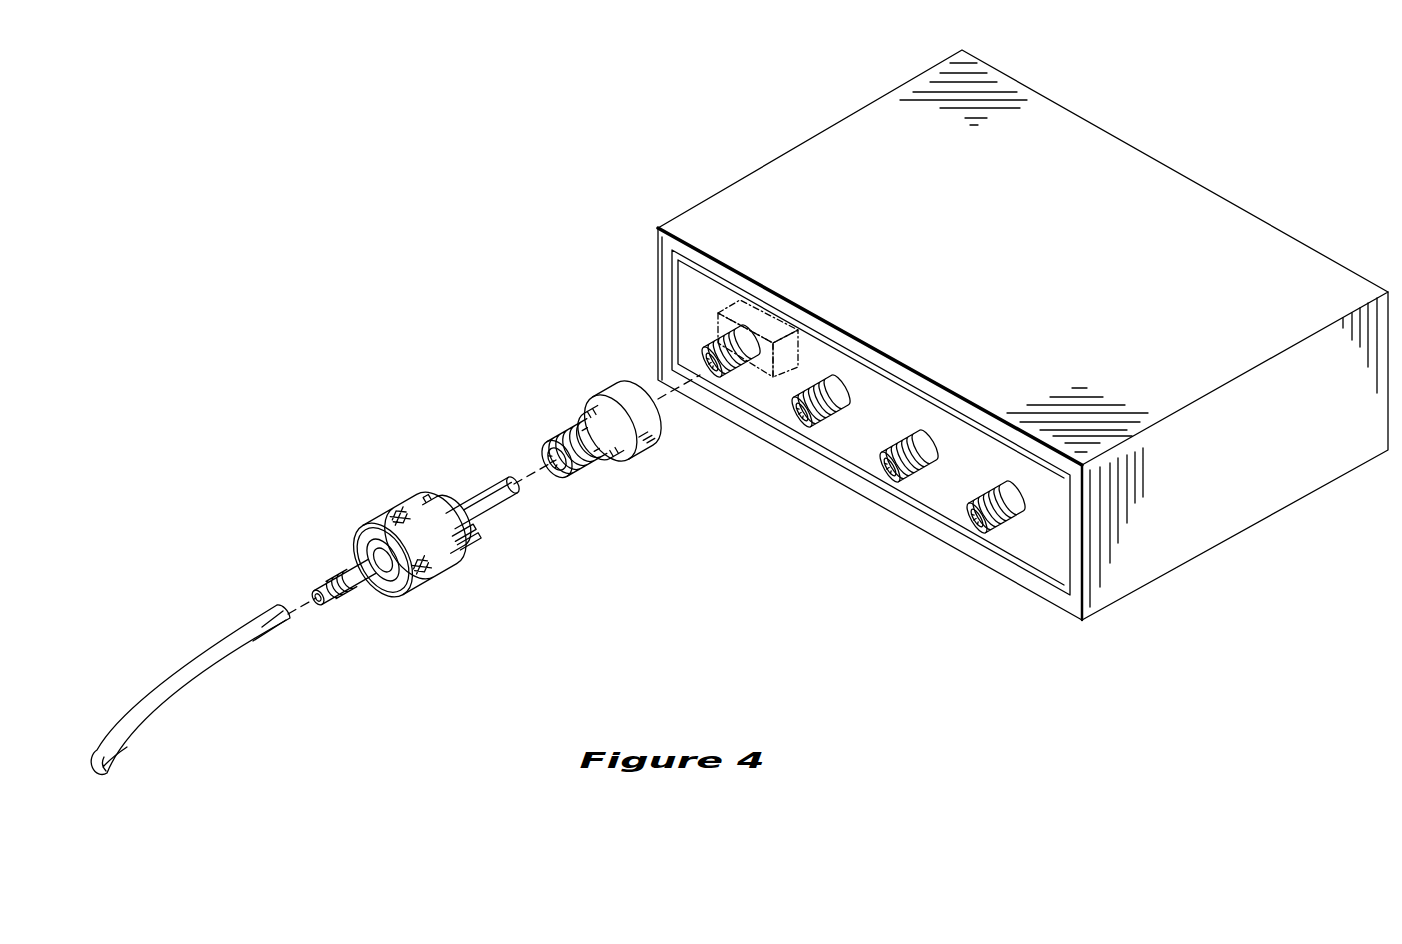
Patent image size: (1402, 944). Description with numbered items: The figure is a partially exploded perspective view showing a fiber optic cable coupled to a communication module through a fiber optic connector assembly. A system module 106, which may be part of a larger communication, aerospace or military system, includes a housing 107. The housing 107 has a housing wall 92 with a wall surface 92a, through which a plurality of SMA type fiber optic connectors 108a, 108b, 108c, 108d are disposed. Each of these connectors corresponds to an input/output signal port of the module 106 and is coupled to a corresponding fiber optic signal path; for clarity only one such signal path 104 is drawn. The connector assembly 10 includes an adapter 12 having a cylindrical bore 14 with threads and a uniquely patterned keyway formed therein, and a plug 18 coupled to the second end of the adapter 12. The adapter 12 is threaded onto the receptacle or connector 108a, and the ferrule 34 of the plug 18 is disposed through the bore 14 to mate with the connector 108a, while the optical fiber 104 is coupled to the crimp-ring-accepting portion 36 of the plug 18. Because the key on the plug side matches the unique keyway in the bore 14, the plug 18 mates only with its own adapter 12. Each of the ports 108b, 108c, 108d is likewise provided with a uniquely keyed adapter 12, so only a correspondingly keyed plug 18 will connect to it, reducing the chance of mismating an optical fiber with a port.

The connector assembly 10 is at (262, 453).
The adapter 12 is at (570, 366).
The bore 14 is at (549, 494).
The plug 18 is at (366, 476).
The ferrule 34 is at (490, 490).
The crimp-ring-accepting portion 36 is at (342, 600).
The housing wall 92 is at (688, 342).
The wall surface 92a is at (685, 304).
The fiber optic signal path 104 is at (168, 692).
The system module 106 is at (755, 101).
The housing 107 is at (980, 264).
The SMA type fiber optic connector 108a is at (727, 380).
The SMA type fiber optic connector 108b is at (818, 425).
The SMA type fiber optic connector 108c is at (907, 475).
The SMA type fiber optic connector 108d is at (993, 530).